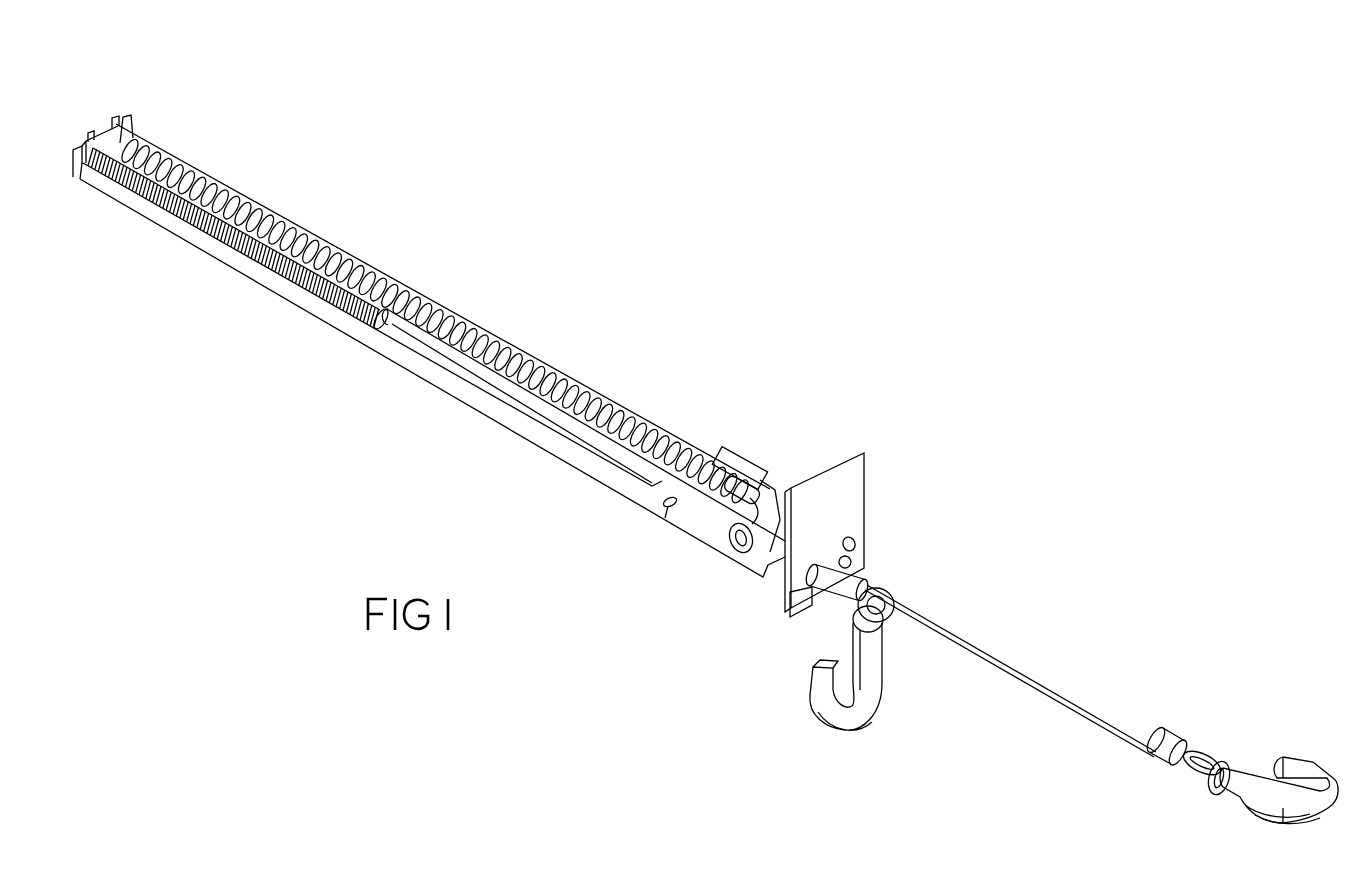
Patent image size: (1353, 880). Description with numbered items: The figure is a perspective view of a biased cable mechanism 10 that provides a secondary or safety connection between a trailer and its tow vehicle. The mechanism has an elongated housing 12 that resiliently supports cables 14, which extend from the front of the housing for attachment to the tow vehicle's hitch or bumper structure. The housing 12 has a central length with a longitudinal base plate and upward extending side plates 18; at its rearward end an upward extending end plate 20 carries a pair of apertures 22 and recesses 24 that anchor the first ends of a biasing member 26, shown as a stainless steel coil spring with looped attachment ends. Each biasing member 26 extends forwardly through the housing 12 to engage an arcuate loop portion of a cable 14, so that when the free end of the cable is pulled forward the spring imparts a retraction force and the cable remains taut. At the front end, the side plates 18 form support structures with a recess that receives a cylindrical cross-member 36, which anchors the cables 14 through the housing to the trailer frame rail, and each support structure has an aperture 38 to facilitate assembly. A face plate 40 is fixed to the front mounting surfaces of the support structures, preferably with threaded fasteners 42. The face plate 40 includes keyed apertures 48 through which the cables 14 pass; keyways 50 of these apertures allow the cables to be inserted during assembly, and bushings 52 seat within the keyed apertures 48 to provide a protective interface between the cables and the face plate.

The biased cable mechanism 10 is at (596, 260).
The housing 12 is at (410, 387).
The cables 14 is at (903, 603).
The side plates 18 is at (573, 370).
The end plate 20 is at (103, 134).
The apertures 22 is at (132, 132).
The recesses 24 is at (122, 110).
The biasing member 26 is at (348, 260).
The cross-member 36 is at (722, 543).
The aperture 38 is at (665, 512).
The face plate 40 is at (858, 468).
The threaded fasteners 42 is at (847, 558).
The keyed apertures 48 is at (808, 600).
The keyways 50 is at (795, 592).
The bushings 52 is at (759, 638).